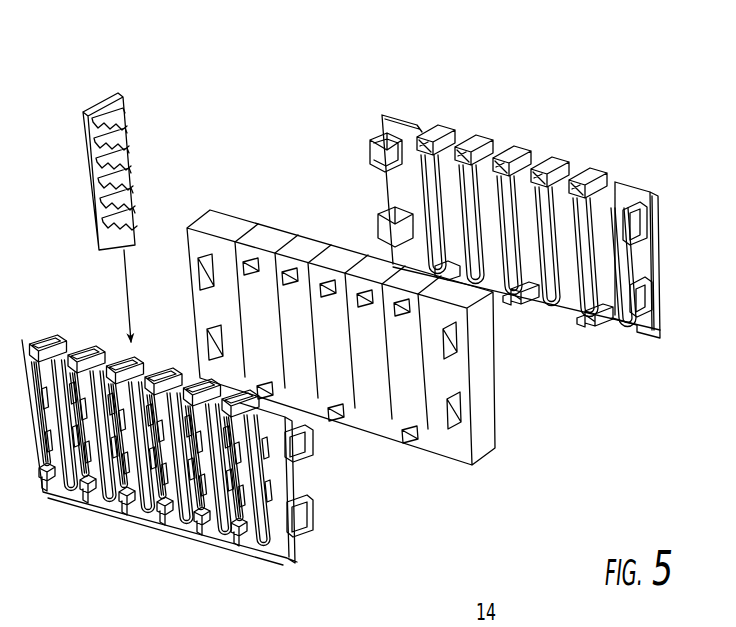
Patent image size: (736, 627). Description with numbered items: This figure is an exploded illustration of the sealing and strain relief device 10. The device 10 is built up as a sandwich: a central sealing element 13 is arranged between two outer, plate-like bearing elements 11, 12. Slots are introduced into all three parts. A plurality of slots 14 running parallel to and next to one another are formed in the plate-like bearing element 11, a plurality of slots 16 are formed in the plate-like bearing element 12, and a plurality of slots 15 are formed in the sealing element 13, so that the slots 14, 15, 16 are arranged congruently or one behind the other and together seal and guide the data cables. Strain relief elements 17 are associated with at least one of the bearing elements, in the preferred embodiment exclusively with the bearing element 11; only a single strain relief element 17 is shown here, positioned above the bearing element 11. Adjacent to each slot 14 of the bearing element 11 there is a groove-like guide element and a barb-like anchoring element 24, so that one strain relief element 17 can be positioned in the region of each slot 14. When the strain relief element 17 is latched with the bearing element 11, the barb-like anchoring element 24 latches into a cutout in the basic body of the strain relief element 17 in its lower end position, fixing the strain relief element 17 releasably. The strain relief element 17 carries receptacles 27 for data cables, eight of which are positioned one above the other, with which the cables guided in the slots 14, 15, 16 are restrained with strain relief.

The sealing and strain relief device 10 is at (628, 116).
The plate-like bearing element 11 is at (318, 558).
The plate-like bearing element 12 is at (649, 348).
The sealing element 13 is at (498, 476).
The slots 14 is at (118, 358).
The slots 15 is at (307, 305).
The slots 16 is at (580, 168).
The strain relief element 17 is at (120, 86).
The barb-like anchoring element 24 is at (233, 533).
The receptacles 27 is at (132, 155).